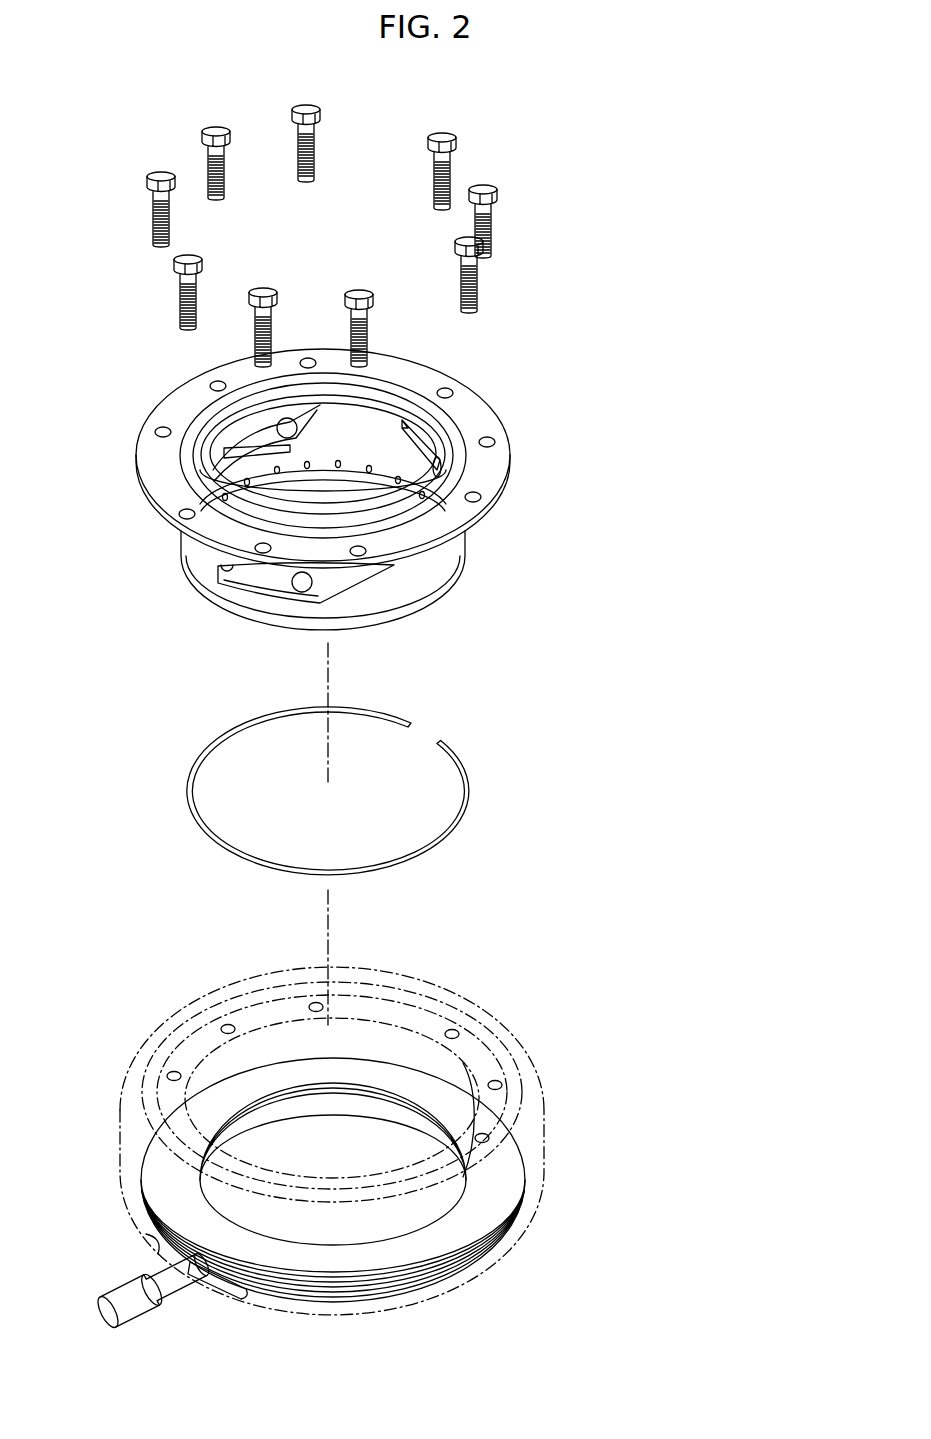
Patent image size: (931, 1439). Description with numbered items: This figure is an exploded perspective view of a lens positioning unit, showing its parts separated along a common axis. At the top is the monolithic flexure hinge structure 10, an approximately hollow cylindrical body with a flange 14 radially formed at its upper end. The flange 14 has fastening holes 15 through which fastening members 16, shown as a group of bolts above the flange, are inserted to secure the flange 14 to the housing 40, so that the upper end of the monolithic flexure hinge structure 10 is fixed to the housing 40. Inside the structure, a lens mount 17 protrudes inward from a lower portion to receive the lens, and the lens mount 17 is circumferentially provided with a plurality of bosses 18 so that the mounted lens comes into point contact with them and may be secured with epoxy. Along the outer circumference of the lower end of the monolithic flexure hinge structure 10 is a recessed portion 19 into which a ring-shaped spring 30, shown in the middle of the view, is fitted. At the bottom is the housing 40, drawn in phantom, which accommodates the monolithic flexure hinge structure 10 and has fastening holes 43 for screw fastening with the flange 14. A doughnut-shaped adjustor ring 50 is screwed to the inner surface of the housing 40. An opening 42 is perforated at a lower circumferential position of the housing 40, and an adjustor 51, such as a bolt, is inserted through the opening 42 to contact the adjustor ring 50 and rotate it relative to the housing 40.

The monolithic flexure hinge structure 10 is at (339, 472).
The flange 14 is at (148, 466).
The fastening holes 15 is at (485, 434).
The fastening members 16 is at (492, 211).
The lens mount 17 is at (318, 463).
The bosses 18 is at (386, 468).
The recessed portion 19 is at (420, 604).
The ring-shaped spring 30 is at (478, 774).
The housing 40 is at (365, 1111).
The opening 42 is at (153, 1240).
The fastening holes 43 is at (450, 1030).
The adjustor ring 50 is at (293, 1180).
The adjustor 51 is at (148, 1318).